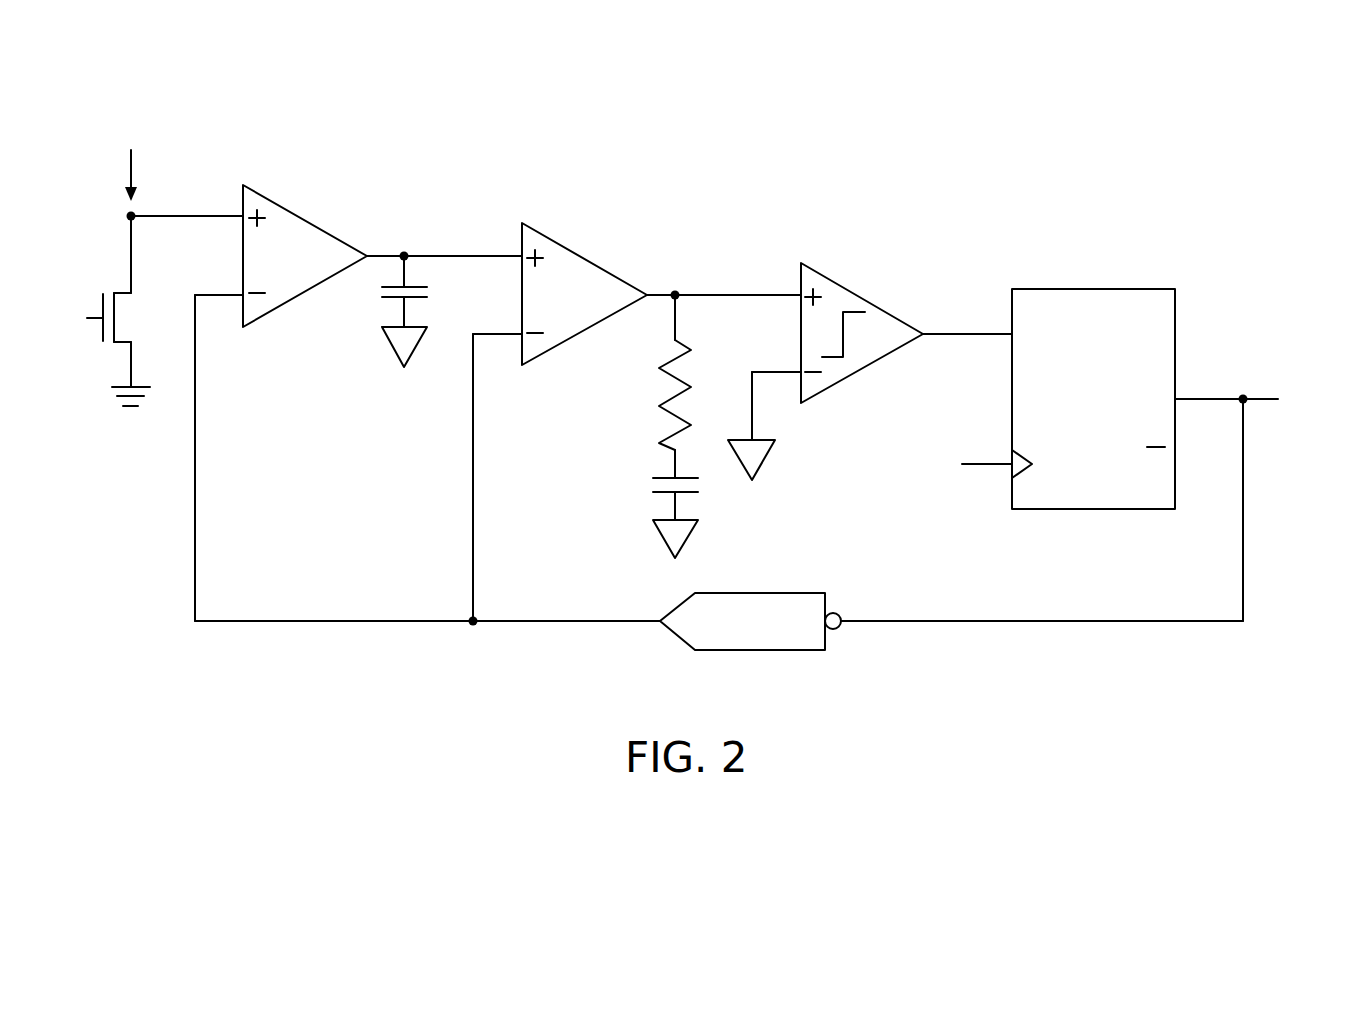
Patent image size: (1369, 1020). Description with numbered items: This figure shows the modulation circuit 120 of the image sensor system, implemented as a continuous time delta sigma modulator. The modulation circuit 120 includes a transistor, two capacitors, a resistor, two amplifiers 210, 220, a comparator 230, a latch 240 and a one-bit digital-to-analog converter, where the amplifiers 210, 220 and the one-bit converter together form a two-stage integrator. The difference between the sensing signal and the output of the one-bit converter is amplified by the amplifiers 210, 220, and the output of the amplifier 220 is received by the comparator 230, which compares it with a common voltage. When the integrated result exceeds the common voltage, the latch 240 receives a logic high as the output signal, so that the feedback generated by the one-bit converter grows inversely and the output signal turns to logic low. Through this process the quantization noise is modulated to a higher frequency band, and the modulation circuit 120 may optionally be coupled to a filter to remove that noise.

The modulation circuit 120 is at (1270, 123).
The amplifier 210 is at (307, 217).
The amplifier 220 is at (583, 257).
The comparator 230 is at (863, 299).
The latch 240 is at (1093, 289).